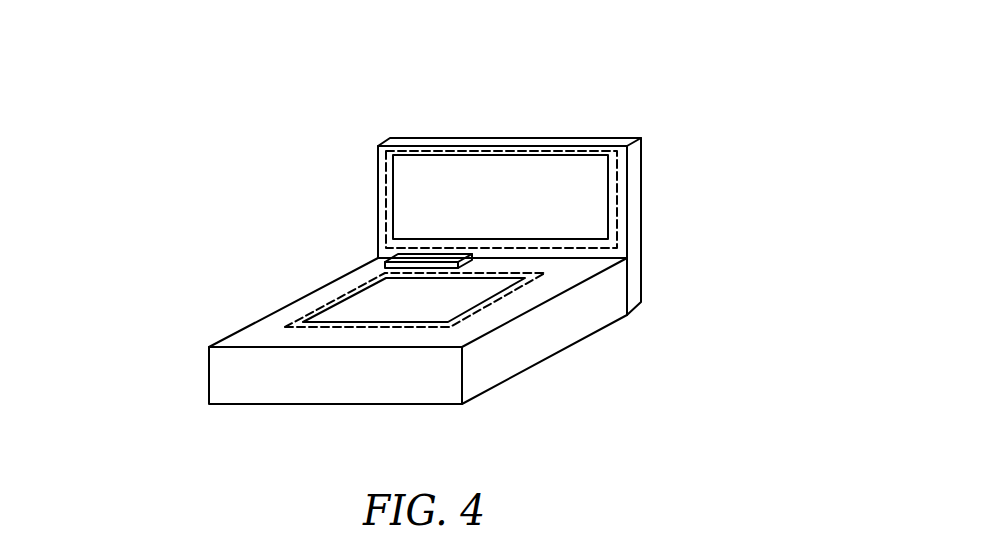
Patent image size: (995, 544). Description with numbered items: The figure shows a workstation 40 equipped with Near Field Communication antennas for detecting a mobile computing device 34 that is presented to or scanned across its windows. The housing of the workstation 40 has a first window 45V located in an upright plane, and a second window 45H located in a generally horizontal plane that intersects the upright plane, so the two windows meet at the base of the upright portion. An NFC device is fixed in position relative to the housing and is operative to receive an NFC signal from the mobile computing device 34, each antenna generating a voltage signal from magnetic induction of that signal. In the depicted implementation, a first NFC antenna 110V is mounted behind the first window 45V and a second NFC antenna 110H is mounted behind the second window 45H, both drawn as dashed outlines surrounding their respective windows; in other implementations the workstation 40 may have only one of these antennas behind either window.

The workstation 40 is at (602, 137).
The first NFC antenna 110V is at (422, 150).
The first window 45V is at (422, 220).
The mobile computing device 34 is at (458, 249).
The second window 45H is at (383, 303).
The second NFC antenna 110H is at (513, 288).